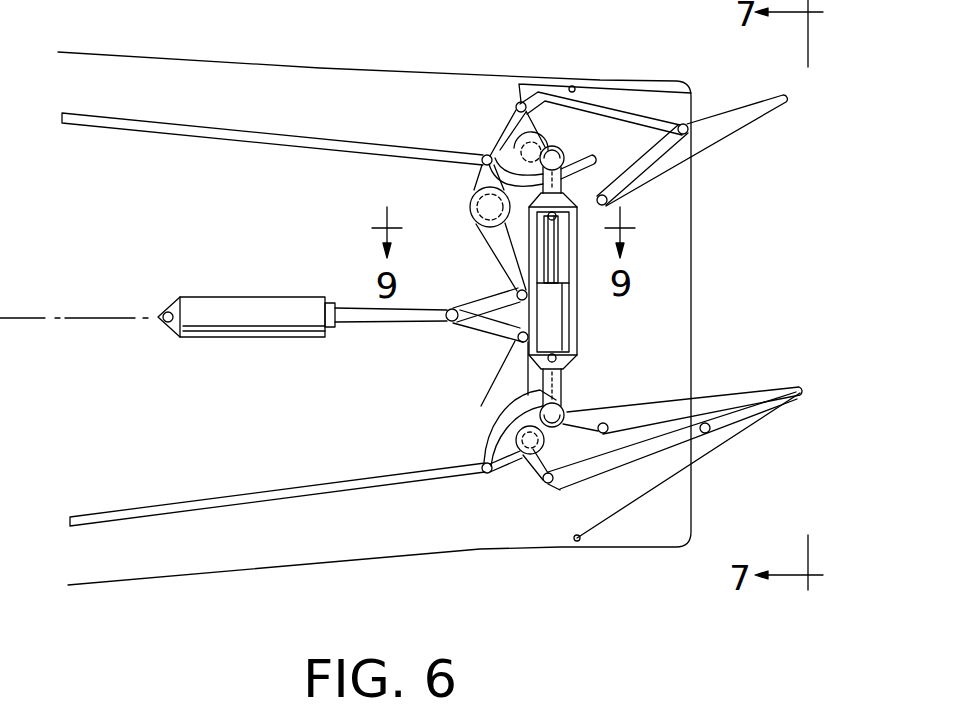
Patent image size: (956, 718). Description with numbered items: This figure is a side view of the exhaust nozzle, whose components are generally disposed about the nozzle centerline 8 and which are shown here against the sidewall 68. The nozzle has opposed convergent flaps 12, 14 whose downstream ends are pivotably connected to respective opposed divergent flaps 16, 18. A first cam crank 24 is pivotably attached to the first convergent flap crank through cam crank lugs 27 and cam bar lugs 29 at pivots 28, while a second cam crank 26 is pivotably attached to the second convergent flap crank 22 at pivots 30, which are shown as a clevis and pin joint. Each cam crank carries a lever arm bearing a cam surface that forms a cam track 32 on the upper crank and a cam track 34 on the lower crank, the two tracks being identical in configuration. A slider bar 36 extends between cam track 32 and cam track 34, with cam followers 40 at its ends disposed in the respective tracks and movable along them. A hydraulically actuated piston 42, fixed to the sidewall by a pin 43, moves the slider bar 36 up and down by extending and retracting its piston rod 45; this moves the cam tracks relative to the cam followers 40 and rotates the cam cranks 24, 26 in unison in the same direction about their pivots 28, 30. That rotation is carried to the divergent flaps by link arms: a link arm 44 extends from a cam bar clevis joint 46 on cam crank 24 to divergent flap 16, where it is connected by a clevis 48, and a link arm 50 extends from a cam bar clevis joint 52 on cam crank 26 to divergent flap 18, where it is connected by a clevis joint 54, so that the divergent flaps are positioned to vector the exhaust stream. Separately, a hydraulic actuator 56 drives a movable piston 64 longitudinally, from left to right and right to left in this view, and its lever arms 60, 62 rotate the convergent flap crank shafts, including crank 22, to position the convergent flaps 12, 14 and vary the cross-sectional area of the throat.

The nozzle centerline 8 is at (89, 308).
The convergent flap 12 is at (608, 205).
The convergent flap 14 is at (587, 423).
The divergent flap 16 is at (733, 129).
The divergent flap 18 is at (743, 402).
The second convergent flap crank 22 is at (478, 412).
The first cam crank 24 is at (523, 137).
The second cam crank 26 is at (527, 460).
The cam crank lugs 27 is at (503, 145).
The pivots 28 is at (483, 158).
The cam bar lugs 29 is at (473, 187).
The pivots 30 is at (485, 474).
The cam track 32 is at (600, 163).
The cam track 34 is at (477, 437).
The first slider bar 36 is at (575, 238).
The cam followers 40 is at (562, 145).
The hydraulically actuated piston 42 is at (553, 317).
The pin 43 is at (577, 360).
The first link arm 44 is at (618, 110).
The piston rod 45 is at (563, 263).
The cam bar clevis joint 46 is at (521, 101).
The clevis 48 is at (685, 124).
The link arm 50 is at (653, 452).
The cam bar clevis joint 52 is at (550, 484).
The clevis joint 54 is at (733, 435).
The hydraulic actuator 56 is at (280, 303).
The first lever arm 60 is at (500, 372).
The first lever arm 62 is at (508, 288).
The movable piston 64 is at (417, 312).
The sidewall 68 is at (693, 295).